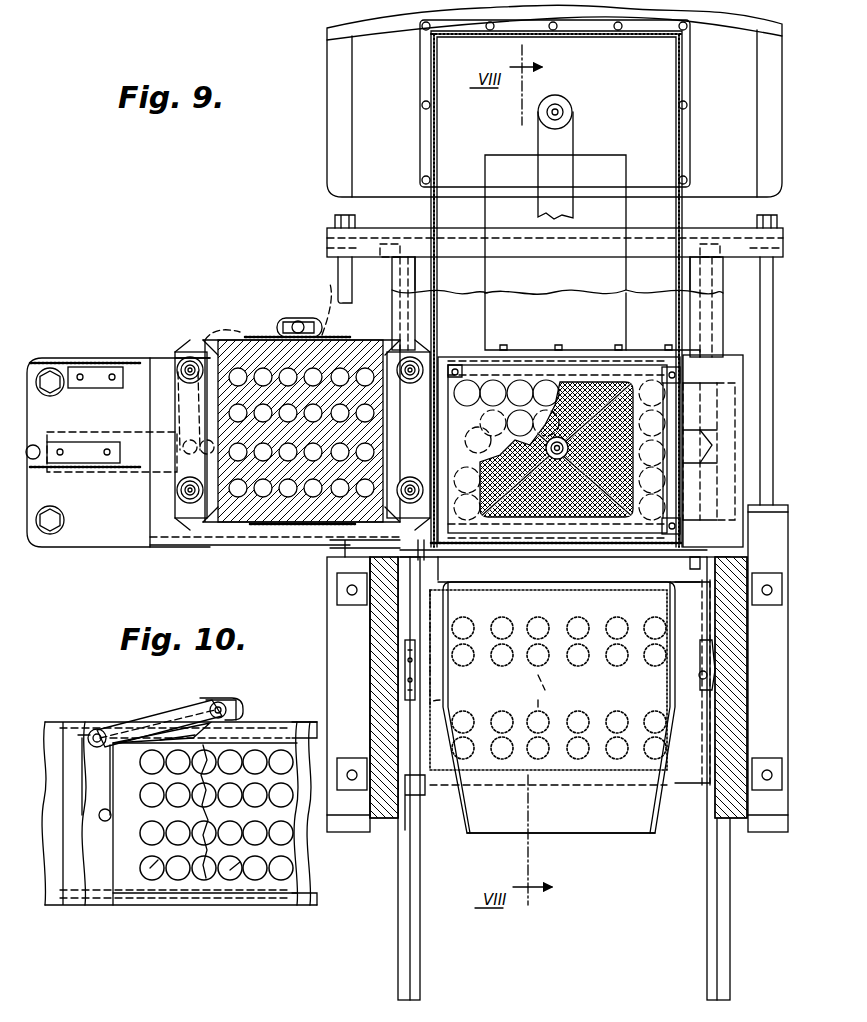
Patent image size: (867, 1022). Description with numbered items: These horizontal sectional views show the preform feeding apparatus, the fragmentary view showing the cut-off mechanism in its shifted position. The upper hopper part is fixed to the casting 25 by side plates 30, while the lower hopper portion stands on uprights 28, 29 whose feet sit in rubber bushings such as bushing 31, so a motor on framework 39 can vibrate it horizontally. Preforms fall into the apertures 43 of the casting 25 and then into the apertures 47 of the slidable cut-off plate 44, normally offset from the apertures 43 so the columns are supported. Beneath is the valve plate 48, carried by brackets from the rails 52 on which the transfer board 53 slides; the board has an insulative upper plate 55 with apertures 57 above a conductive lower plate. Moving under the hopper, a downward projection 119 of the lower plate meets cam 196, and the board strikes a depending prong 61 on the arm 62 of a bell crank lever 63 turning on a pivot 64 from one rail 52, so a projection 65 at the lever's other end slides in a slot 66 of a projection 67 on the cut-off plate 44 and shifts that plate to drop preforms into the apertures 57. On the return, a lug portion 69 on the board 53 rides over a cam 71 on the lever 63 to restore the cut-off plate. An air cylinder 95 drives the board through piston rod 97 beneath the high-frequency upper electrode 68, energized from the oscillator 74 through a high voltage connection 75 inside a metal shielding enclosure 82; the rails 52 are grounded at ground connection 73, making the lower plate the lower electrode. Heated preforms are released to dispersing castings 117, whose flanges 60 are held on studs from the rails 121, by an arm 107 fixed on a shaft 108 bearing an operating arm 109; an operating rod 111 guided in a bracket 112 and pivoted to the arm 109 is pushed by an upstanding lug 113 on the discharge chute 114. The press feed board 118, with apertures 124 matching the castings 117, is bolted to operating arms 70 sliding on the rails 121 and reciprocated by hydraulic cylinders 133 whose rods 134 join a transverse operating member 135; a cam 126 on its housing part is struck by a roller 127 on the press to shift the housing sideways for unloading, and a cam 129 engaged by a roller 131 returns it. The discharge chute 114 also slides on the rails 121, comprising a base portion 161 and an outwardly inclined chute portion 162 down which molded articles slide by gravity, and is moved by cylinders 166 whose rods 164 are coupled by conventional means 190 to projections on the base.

In FIG. 9, the casting 25 is at (246, 523).
In FIG. 9, the upright 28 is at (186, 358).
In FIG. 9, the upright 29 is at (418, 360).
In FIG. 9, the side plates 30 is at (258, 340).
In FIG. 9, the rubber bushing 31 is at (176, 360).
In FIG. 9, the framework 39 is at (92, 465).
In FIG. 9, the apertures 43 is at (238, 462).
In FIG. 10, the cut-off plate 44 is at (248, 878).
In FIG. 10, the apertures 47 is at (240, 870).
In FIG. 9, the valve plate 48 is at (155, 520).
In FIG. 10, the valve plate 48 is at (80, 908).
In FIG. 10, the rails 52 is at (307, 722).
In FIG. 9, the transfer board 53 is at (510, 368).
In FIG. 10, the transfer board 53 is at (176, 895).
In FIG. 10, the upper plate 55 is at (128, 910).
In FIG. 10, the apertures 57 is at (150, 848).
In FIG. 9, the flanges 60 is at (743, 480).
In FIG. 9, the depending prong 61 is at (182, 448).
In FIG. 10, the depending prong 61 is at (99, 816).
In FIG. 9, the arm 62 is at (176, 405).
In FIG. 10, the arm 62 is at (98, 778).
In FIG. 10, the bell crank lever 63 is at (143, 718).
In FIG. 10, the pivot 64 is at (100, 728).
In FIG. 9, the projection 65 is at (290, 318).
In FIG. 10, the projection 65 is at (218, 700).
In FIG. 9, the slot 66 is at (300, 320).
In FIG. 10, the slot 66 is at (228, 708).
In FIG. 9, the projection 67 is at (278, 323).
In FIG. 10, the projection 67 is at (228, 702).
In FIG. 9, the upper electrode 68 is at (582, 383).
In FIG. 9, the lug portion 69 is at (457, 366).
In FIG. 10, the lug portion 69 is at (161, 749).
In FIG. 9, the operating arms 70 is at (414, 308).
In FIG. 9, the cam 71 is at (214, 326).
In FIG. 10, the cam 71 is at (170, 742).
In FIG. 9, the ground connection 73 is at (627, 180).
In FIG. 9, the oscillator 74 is at (362, 130).
In FIG. 9, the high voltage connection 75 is at (573, 135).
In FIG. 9, the shielding enclosure 82 is at (684, 128).
In FIG. 9, the air cylinder 95 is at (90, 432).
In FIG. 9, the piston rod 97 is at (471, 429).
In FIG. 9, the arm 107 is at (578, 548).
In FIG. 9, the shaft 108 is at (440, 548).
In FIG. 9, the operating arm 109 is at (364, 554).
In FIG. 9, the operating rod 111 is at (548, 687).
In FIG. 9, the bracket 112 is at (370, 742).
In FIG. 9, the upstanding lug 113 is at (425, 795).
In FIG. 9, the discharge chute 114 is at (606, 836).
In FIG. 9, the dispersing castings 117 is at (682, 405).
In FIG. 9, the press feed board 118 is at (648, 348).
In FIG. 9, the downward projection 119 is at (560, 378).
In FIG. 9, the rails 121 is at (421, 980).
In FIG. 9, the apertures 124 is at (520, 672).
In FIG. 9, the cam 126 is at (730, 418).
In FIG. 9, the roller 127 is at (715, 670).
In FIG. 9, the cam 129 is at (490, 545).
In FIG. 9, the roller 131 is at (418, 672).
In FIG. 9, the hydraulic cylinders 133 is at (356, 832).
In FIG. 9, the rods 134 is at (352, 302).
In FIG. 9, the transverse operating member 135 is at (384, 229).
In FIG. 9, the base portion 161 is at (690, 772).
In FIG. 9, the chute portion 162 is at (560, 834).
In FIG. 9, the rods 164 is at (688, 563).
In FIG. 9, the cylinders 166 is at (420, 287).
In FIG. 9, the conventional means 190 is at (500, 575).
In FIG. 9, the cam 196 is at (314, 297).